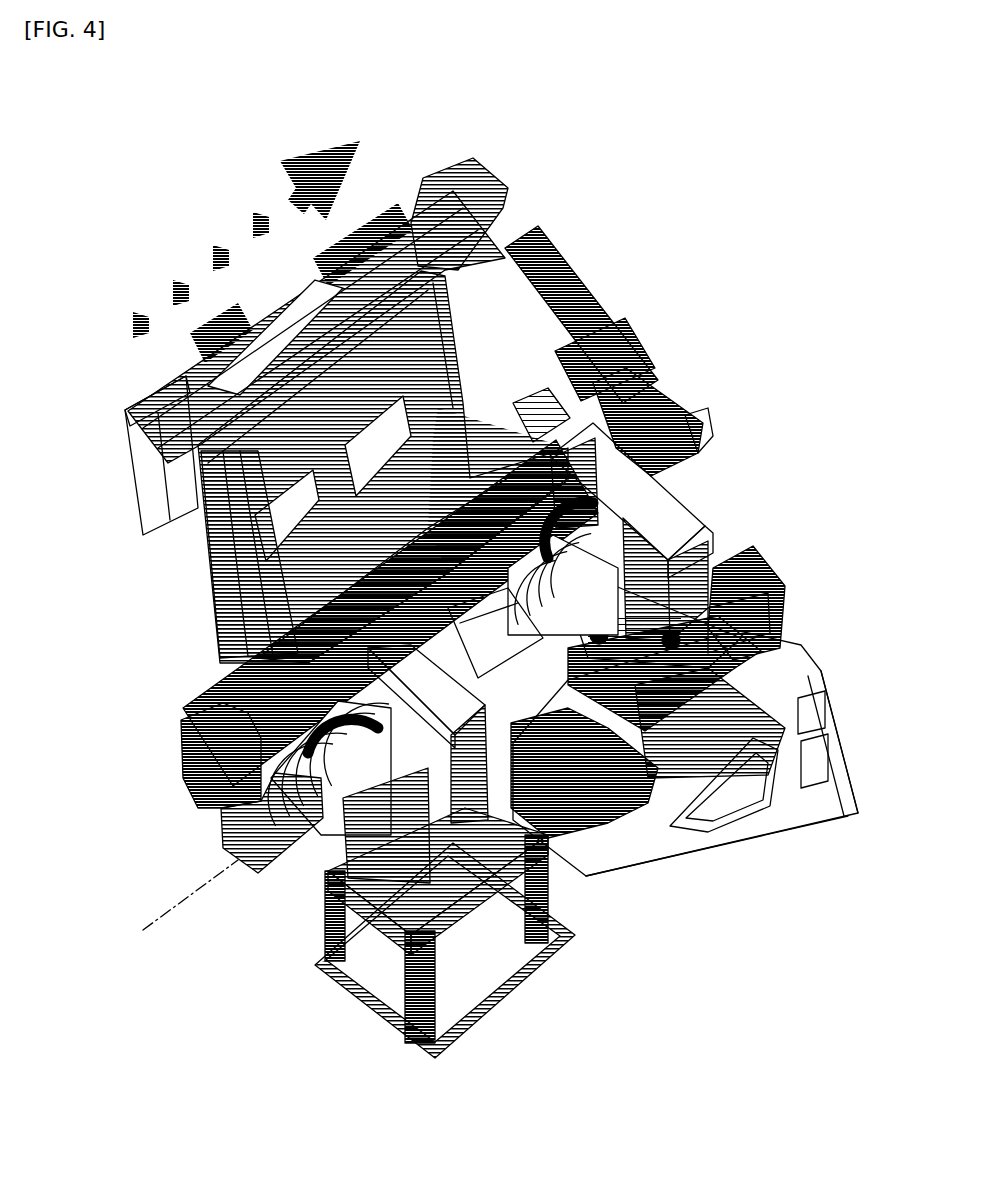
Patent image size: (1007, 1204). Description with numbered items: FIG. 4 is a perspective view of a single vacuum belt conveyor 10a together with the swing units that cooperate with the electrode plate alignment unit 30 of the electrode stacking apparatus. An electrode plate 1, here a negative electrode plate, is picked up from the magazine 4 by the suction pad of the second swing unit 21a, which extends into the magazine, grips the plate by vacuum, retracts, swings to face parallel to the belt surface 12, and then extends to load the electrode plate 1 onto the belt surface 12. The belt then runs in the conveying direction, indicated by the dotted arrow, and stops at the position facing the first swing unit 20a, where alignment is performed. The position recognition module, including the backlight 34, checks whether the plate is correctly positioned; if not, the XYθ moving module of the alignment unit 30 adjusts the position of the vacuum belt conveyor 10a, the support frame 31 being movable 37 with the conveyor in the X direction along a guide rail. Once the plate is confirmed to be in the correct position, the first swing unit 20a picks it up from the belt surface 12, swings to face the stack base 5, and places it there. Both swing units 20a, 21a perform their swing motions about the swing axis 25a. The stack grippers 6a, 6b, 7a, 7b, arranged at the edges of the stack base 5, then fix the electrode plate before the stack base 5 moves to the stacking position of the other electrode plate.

The electrode plate 1 is at (234, 678).
The magazine 4 is at (478, 928).
The stack base 5 is at (612, 733).
The stack gripper 6a is at (598, 723).
The stack gripper 6b is at (729, 616).
The stack gripper 7a is at (567, 707).
The stack gripper 7b is at (707, 579).
The vacuum belt conveyor 10a is at (177, 784).
The belt surface 12 is at (329, 594).
The first swing unit 20a is at (687, 477).
The second swing unit 21a is at (478, 705).
The swing axis 25a is at (189, 898).
The electrode plate alignment unit 30 is at (191, 604).
The support frame 31 is at (192, 530).
The backlight 34 is at (524, 409).
The movable (X-direction movement) 37 is at (152, 380).